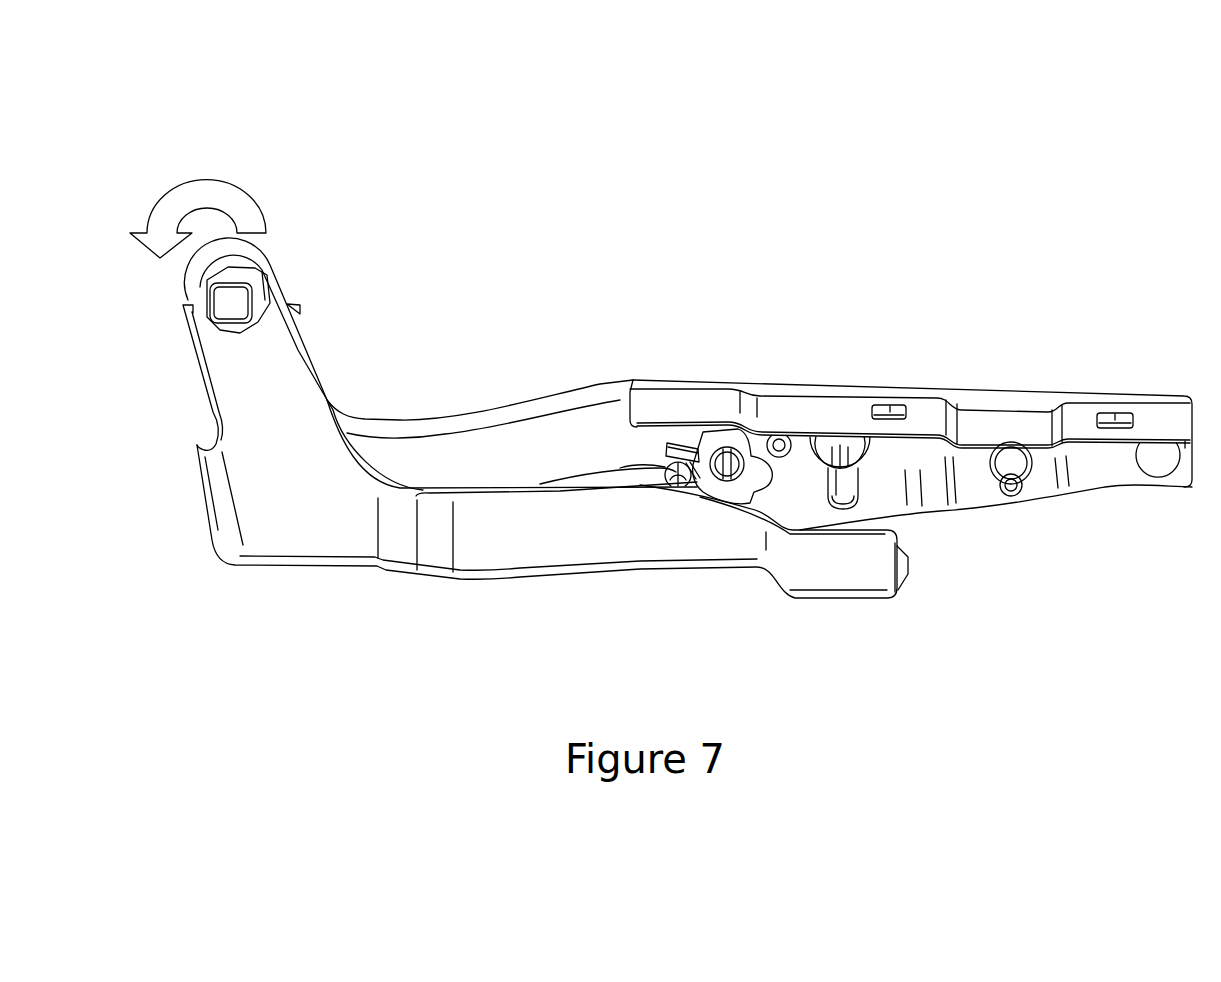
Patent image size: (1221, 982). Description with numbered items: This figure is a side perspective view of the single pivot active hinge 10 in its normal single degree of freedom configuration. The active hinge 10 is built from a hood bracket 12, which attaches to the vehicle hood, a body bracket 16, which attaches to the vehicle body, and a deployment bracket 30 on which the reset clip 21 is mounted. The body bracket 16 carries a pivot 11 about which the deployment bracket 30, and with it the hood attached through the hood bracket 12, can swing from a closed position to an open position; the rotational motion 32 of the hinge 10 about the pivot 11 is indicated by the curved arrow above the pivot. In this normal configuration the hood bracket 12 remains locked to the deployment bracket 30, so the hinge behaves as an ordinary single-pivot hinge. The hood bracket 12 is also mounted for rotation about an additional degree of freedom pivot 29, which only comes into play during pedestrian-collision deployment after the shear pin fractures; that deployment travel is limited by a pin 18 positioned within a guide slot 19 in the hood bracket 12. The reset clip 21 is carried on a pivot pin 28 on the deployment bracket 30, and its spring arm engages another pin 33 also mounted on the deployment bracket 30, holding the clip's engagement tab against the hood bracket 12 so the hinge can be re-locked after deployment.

The single pivot active hinge 10 is at (810, 327).
The pivot 11 is at (223, 302).
The hood bracket 12 is at (833, 405).
The body bracket 16 is at (288, 559).
The pin 18 is at (847, 450).
The guide slot 19 is at (846, 492).
The reset clip 21 is at (697, 455).
The pivot pin 28 is at (738, 474).
The additional degree of freedom pivot 29 is at (1150, 463).
The deployment bracket 30 is at (464, 426).
The rotational motion 32 is at (243, 180).
The pin 33 is at (678, 476).